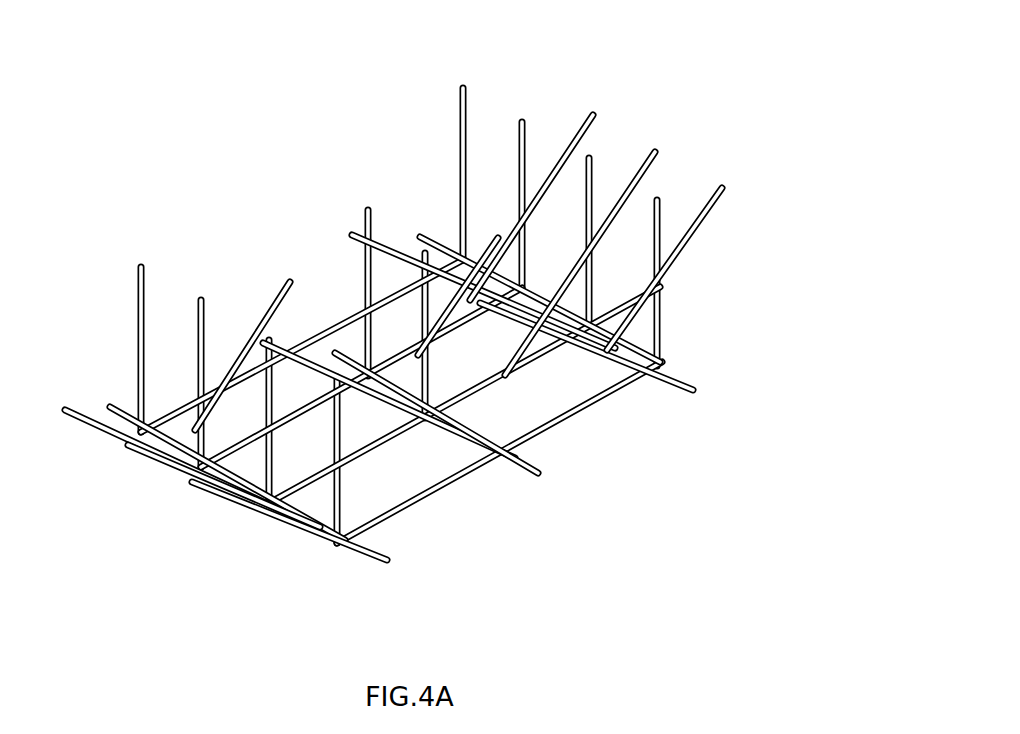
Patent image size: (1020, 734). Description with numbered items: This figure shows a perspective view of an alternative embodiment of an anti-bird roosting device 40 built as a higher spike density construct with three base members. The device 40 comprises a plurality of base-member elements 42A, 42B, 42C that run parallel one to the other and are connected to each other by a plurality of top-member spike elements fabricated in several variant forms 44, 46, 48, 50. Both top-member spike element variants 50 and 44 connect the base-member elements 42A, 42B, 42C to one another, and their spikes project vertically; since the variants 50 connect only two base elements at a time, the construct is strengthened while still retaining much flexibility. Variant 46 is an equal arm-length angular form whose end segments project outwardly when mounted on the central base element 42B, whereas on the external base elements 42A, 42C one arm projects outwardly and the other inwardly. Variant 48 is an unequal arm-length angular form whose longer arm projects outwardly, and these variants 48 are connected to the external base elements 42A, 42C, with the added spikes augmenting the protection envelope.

The anti-bird roosting device 40 is at (716, 64).
The base-member element 42A is at (367, 560).
The base-member element 42B is at (522, 478).
The base-member element 42C is at (686, 393).
The top-member spike element 44 is at (661, 323).
The top-member spike element 46 is at (710, 218).
The top-member spike element 48 is at (655, 166).
The top-member spike element 50 is at (593, 180).